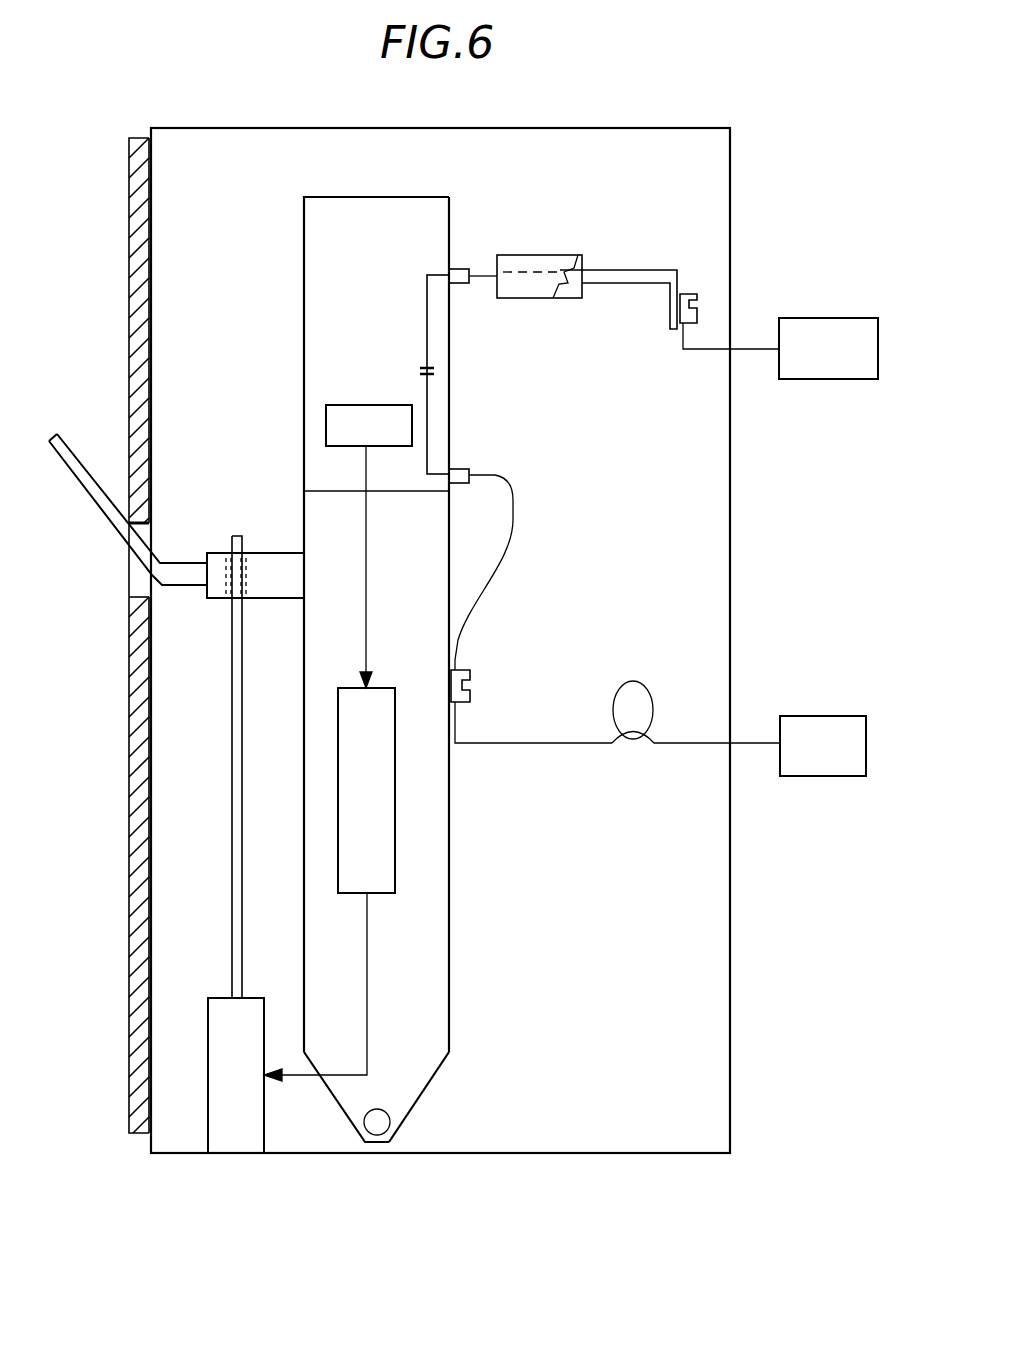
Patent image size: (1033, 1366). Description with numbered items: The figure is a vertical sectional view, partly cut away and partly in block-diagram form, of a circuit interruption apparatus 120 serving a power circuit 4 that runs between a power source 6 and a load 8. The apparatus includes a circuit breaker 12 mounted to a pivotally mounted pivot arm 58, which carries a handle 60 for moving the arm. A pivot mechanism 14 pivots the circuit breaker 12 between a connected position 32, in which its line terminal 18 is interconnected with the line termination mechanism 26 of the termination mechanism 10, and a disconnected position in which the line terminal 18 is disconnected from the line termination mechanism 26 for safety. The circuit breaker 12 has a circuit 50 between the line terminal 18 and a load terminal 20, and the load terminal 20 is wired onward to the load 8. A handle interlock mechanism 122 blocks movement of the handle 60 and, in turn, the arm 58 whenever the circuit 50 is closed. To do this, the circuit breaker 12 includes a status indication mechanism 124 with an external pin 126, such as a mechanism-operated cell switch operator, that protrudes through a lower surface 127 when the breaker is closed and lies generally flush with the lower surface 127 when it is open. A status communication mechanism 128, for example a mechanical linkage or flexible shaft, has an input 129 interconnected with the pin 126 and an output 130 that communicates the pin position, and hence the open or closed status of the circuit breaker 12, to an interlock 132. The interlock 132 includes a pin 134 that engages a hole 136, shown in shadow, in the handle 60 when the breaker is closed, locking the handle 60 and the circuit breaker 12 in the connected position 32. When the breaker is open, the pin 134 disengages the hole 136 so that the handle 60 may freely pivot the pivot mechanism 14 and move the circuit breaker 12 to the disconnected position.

The power circuit 4 is at (845, 565).
The power source 6 is at (847, 318).
The load 8 is at (828, 716).
The termination mechanism 10 is at (595, 514).
The circuit breaker 12 is at (450, 398).
The pivot mechanism 14 is at (476, 1088).
The line terminal 18 is at (463, 268).
The load terminal 20 is at (466, 469).
The line termination mechanism 26 is at (634, 261).
The connected position 32 is at (559, 228).
The circuit 50 is at (418, 369).
The pivot arm 58 is at (450, 967).
The handle 60 is at (88, 487).
The circuit interruption apparatus 120 is at (390, 1162).
The handle interlock mechanism 122 is at (194, 1033).
The status indication mechanism 124 is at (330, 405).
The external pin 126 is at (366, 467).
The lower surface 127 is at (316, 491).
The status communication mechanism 128 is at (395, 817).
The input 129 is at (368, 688).
The output 130 is at (368, 895).
The interlock 132 is at (210, 1141).
The pin 134 is at (232, 756).
The hole 136 is at (221, 582).